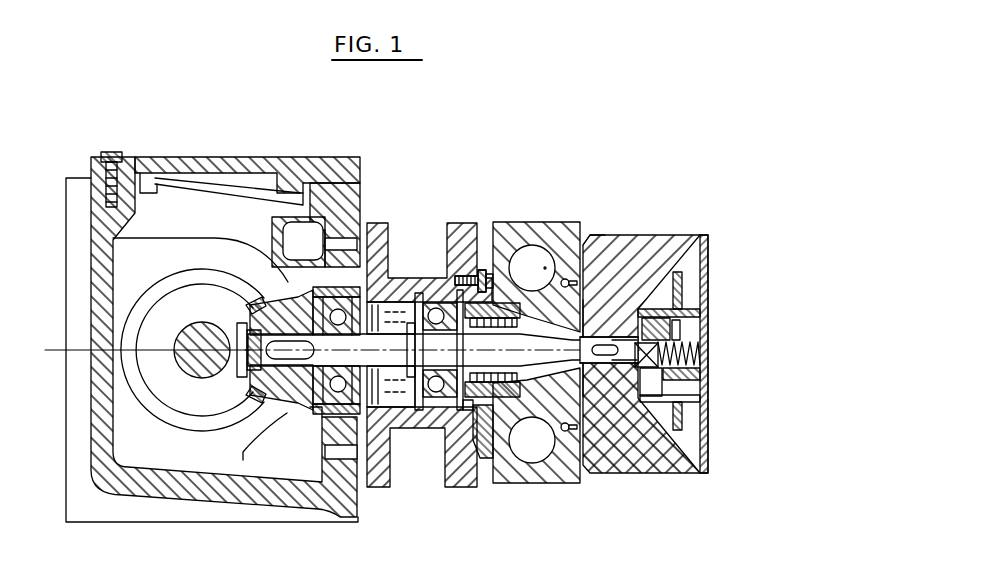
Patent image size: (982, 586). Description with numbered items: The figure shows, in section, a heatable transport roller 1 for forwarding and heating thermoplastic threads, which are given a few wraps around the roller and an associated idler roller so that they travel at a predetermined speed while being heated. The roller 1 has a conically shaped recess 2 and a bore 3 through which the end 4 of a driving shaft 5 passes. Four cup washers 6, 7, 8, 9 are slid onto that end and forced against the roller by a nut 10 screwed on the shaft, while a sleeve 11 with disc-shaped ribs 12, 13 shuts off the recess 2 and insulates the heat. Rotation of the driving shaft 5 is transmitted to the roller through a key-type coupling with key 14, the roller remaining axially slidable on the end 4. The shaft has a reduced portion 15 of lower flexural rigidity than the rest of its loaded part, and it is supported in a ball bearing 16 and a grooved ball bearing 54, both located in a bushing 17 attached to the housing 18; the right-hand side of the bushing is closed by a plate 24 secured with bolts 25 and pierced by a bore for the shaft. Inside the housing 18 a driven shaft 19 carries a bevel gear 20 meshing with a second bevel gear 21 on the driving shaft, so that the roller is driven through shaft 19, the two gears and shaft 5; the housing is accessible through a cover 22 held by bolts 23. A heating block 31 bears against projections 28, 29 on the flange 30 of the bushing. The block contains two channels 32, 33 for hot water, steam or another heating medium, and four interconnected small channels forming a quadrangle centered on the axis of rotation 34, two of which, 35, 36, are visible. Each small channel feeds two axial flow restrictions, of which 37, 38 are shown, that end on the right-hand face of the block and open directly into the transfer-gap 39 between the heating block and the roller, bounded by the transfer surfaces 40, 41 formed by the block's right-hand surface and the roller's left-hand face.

The heatable transport roller 1 is at (680, 465).
The conically shaped recess 2 is at (688, 283).
The bore 3 is at (644, 345).
The end of driving shaft 4 is at (627, 346).
The driving shaft 5 is at (643, 463).
The cup washer 6 is at (662, 312).
The cup washer 7 is at (668, 324).
The cup washer 8 is at (678, 338).
The cup washer 9 is at (700, 353).
The nut 10 is at (703, 376).
The sleeve 11 is at (702, 398).
The disc-shaped rib 12 is at (684, 421).
The disc-shaped rib 13 is at (710, 440).
The key 14 is at (611, 353).
The reduced portion 15 is at (392, 342).
The ball bearing 16 is at (368, 230).
The bushing 17 is at (410, 420).
The housing 18 is at (124, 480).
The driven shaft 19 is at (202, 350).
The bevel gear 20 is at (140, 312).
The second bevel gear 21 is at (273, 377).
The cover 22 is at (302, 170).
The bolts 23 is at (113, 151).
The plate 24 is at (460, 485).
The bolts 25 is at (468, 274).
The projection 28 is at (488, 268).
The projection 29 is at (487, 447).
The flange 30 is at (470, 490).
The heating block 31 is at (507, 473).
The channel 32 is at (535, 225).
The channel 33 is at (532, 455).
The axis of rotation 34 is at (352, 465).
The small channel 35 is at (533, 255).
The small channel 36 is at (560, 435).
The axial flow restriction 37 is at (545, 262).
The axial flow restriction 38 is at (577, 442).
The transfer-gap 39 is at (578, 210).
The transfer surface 40 is at (563, 279).
The transfer surface 41 is at (603, 232).
The grooved ball bearing 54 is at (435, 428).